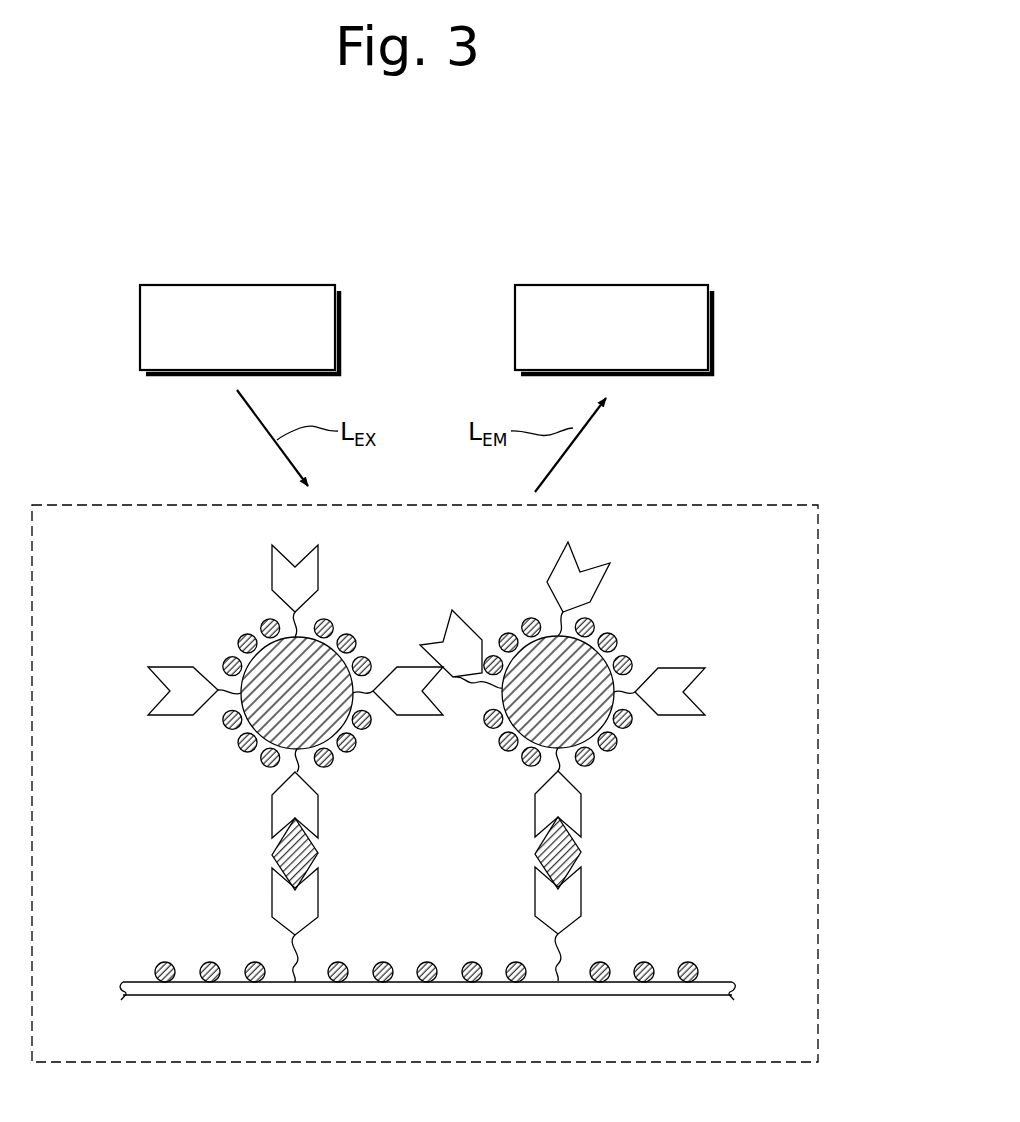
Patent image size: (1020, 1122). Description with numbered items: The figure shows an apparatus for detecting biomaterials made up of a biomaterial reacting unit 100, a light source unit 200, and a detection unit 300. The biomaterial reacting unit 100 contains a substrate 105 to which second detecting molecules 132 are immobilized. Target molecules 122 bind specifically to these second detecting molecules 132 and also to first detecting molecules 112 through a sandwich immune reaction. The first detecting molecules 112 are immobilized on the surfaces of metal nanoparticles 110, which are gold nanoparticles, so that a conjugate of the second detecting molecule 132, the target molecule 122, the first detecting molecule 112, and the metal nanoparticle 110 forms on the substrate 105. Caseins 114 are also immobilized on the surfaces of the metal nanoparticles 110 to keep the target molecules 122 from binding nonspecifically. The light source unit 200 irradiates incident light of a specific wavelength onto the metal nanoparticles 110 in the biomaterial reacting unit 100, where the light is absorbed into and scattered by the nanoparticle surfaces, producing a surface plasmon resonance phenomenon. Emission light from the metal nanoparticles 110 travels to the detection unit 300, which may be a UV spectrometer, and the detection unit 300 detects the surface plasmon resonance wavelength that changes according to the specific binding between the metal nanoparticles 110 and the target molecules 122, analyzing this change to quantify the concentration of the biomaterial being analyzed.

The biomaterial reacting unit 100 is at (818, 652).
The substrate 105 is at (143, 985).
The metal nanoparticles 110 is at (259, 718).
The first detecting molecules 112 is at (310, 806).
The caseins 114 is at (238, 640).
The target molecules 122 is at (315, 853).
The second detecting molecules 132 is at (310, 897).
The light source unit 200 is at (281, 285).
The detection unit 300 is at (655, 285).